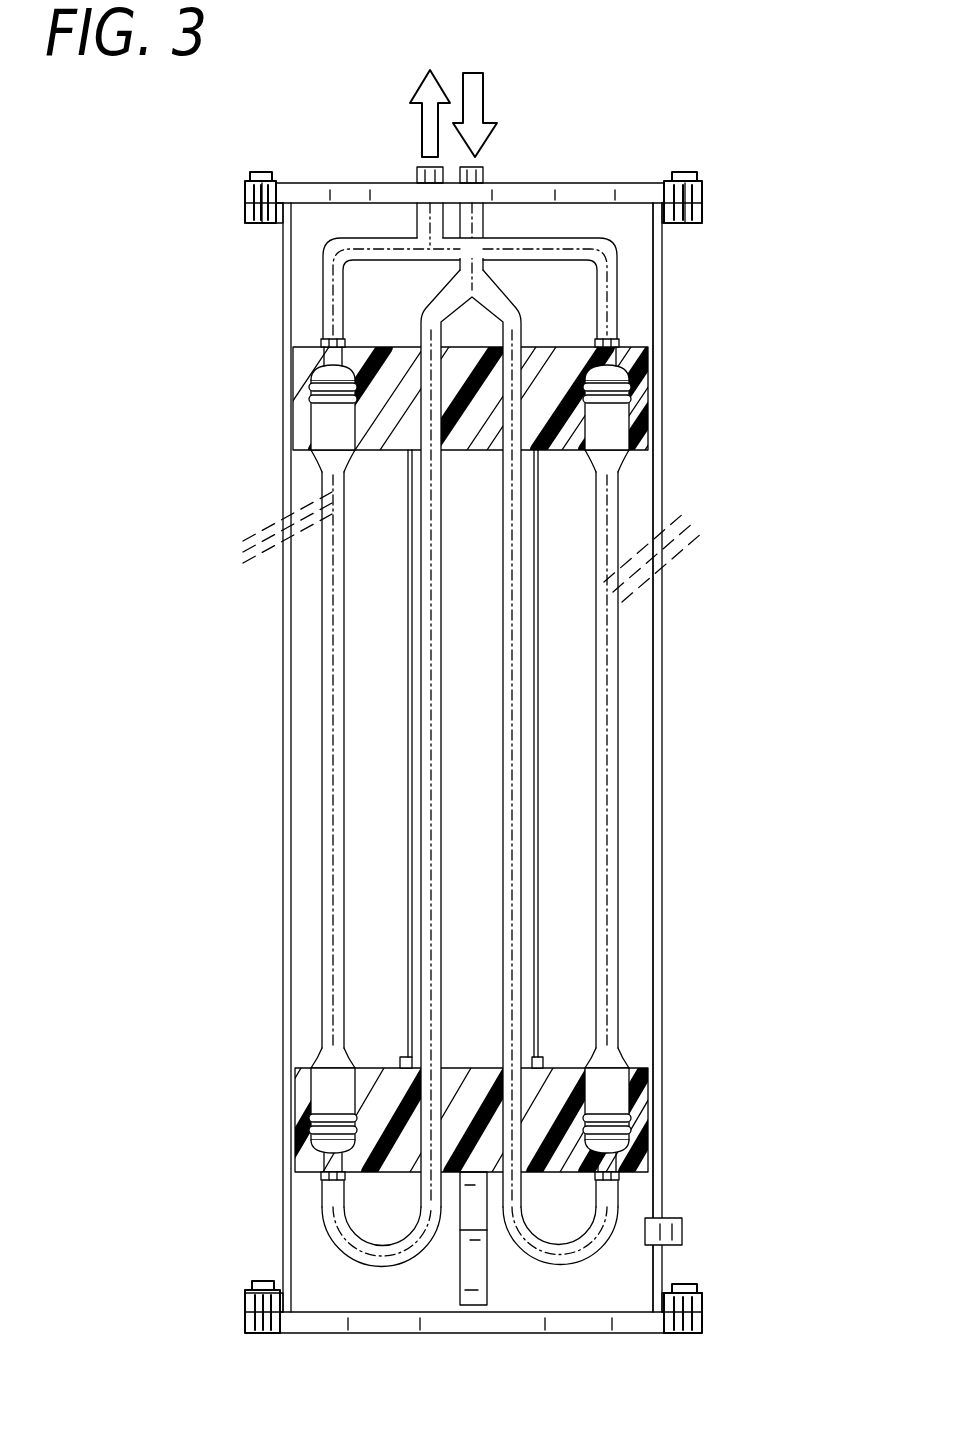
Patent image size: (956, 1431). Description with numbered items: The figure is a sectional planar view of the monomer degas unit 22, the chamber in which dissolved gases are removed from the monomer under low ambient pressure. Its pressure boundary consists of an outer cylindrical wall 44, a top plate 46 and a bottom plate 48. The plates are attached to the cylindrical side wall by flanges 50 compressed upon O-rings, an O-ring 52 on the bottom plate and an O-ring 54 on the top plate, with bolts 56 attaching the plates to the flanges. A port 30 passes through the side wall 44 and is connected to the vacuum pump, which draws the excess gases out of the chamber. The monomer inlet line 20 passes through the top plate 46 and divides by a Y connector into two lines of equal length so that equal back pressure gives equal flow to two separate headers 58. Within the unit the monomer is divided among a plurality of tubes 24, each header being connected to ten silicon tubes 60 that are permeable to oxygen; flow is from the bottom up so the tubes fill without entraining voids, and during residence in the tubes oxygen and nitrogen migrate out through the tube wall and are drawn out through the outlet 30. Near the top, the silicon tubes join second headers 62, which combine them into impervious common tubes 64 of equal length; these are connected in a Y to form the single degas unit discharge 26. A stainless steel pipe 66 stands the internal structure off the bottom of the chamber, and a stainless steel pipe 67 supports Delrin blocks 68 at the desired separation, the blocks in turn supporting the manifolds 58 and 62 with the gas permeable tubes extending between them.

The monomer inlet line 20 is at (485, 170).
The degas unit 22 is at (662, 680).
The tubes 24 is at (345, 830).
The degas unit discharge 26 is at (420, 170).
The port 30 is at (683, 1230).
The outer cylindrical wall 44 is at (662, 940).
The top plate 46 is at (560, 195).
The bottom plate 48 is at (515, 1333).
The flanges 50 is at (690, 216).
The O-ring 52 is at (285, 1333).
The O-ring 54 is at (272, 186).
The bolts 56 is at (262, 172).
The headers 58 is at (630, 1100).
The silicon tubes 60 is at (466, 547).
The second headers 62 is at (633, 395).
The common tubes 64 is at (618, 268).
The stainless steel pipe 66 is at (462, 1280).
The stainless steel pipe 67 is at (533, 917).
The Delrin blocks 68 is at (557, 440).